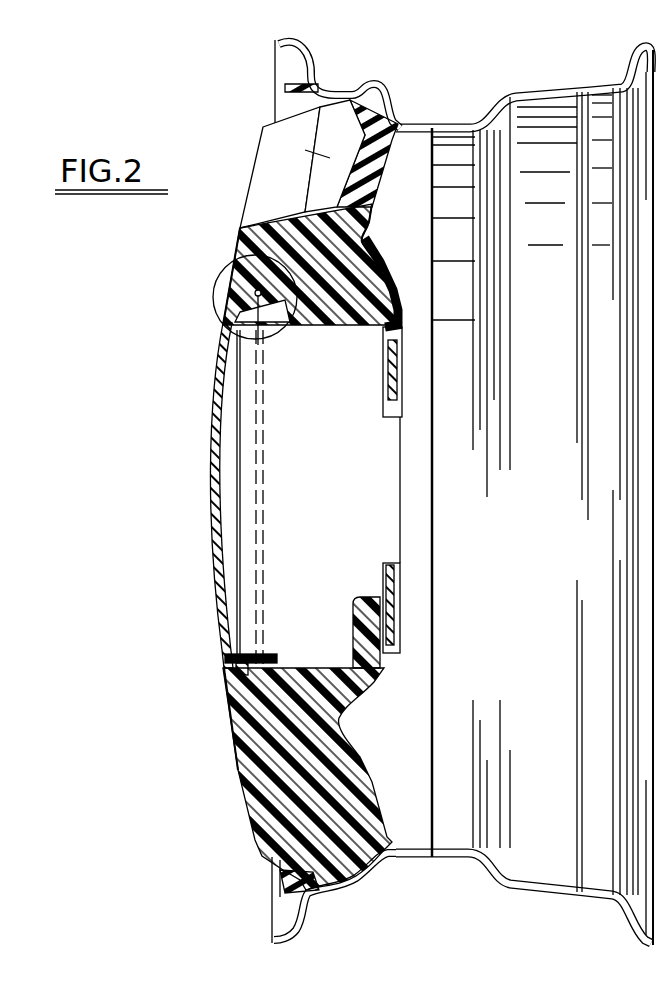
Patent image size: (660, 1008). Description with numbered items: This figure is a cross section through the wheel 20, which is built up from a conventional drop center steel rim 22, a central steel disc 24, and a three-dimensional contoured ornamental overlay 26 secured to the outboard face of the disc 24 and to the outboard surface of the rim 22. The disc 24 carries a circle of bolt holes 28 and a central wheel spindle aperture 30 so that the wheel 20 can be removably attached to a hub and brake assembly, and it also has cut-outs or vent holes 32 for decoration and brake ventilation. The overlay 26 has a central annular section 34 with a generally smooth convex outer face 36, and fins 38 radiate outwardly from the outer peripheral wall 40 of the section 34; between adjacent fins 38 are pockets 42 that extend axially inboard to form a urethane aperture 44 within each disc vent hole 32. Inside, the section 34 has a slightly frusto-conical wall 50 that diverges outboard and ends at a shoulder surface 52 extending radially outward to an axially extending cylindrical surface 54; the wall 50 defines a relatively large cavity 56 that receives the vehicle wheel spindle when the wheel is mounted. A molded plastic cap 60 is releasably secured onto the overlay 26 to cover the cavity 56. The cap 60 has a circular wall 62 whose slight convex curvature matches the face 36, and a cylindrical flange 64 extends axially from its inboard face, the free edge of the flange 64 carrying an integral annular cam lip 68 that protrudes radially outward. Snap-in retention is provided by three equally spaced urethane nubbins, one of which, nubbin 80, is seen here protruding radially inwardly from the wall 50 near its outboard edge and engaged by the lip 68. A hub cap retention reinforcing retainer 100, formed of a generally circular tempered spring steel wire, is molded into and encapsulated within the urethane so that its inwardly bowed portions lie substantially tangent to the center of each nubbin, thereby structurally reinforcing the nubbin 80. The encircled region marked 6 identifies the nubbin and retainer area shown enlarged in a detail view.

The detail circle 6 is at (213, 300).
The wheel 20 is at (262, 60).
The drop center steel rim 22 is at (546, 90).
The central steel disc 24 is at (438, 240).
The ornamental overlay 26 is at (228, 256).
The bolt holes 28 is at (402, 365).
The central wheel spindle aperture 30 is at (401, 484).
The vent holes 32 is at (372, 223).
The central annular section 34 is at (243, 241).
The convex outer face 36 is at (228, 713).
The fins 38 is at (272, 136).
The outer peripheral wall 40 is at (260, 226).
The pockets 42 is at (323, 200).
The urethane aperture 44 is at (380, 194).
The frusto-conical wall 50 is at (366, 328).
The shoulder surface 52 is at (236, 508).
The cylindrical surface 54 is at (226, 682).
The cavity 56 is at (352, 514).
The cap 60 is at (212, 425).
The circular wall 62 is at (213, 550).
The cylindrical flange 64 is at (240, 656).
The annular cam lip 68 is at (266, 334).
The nubbin 80 is at (275, 314).
The hub cap retention reinforcing retainer 100 is at (268, 462).